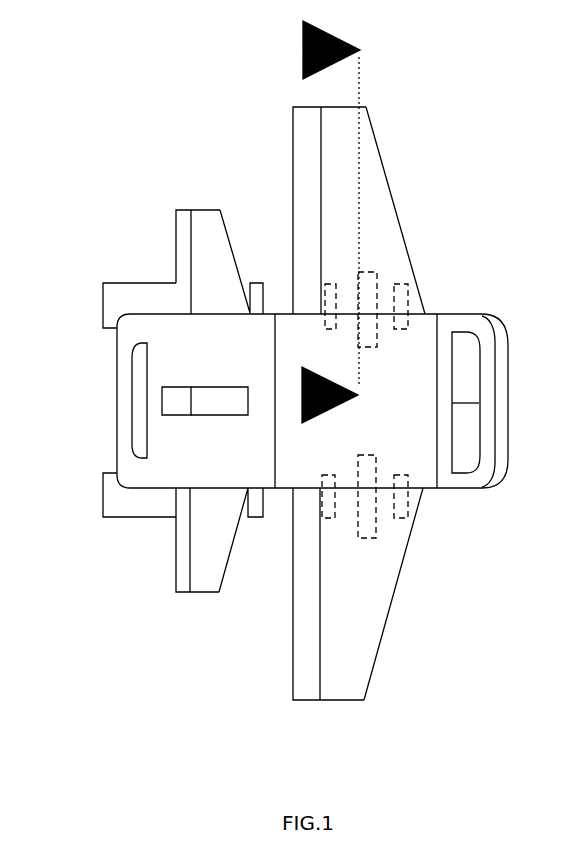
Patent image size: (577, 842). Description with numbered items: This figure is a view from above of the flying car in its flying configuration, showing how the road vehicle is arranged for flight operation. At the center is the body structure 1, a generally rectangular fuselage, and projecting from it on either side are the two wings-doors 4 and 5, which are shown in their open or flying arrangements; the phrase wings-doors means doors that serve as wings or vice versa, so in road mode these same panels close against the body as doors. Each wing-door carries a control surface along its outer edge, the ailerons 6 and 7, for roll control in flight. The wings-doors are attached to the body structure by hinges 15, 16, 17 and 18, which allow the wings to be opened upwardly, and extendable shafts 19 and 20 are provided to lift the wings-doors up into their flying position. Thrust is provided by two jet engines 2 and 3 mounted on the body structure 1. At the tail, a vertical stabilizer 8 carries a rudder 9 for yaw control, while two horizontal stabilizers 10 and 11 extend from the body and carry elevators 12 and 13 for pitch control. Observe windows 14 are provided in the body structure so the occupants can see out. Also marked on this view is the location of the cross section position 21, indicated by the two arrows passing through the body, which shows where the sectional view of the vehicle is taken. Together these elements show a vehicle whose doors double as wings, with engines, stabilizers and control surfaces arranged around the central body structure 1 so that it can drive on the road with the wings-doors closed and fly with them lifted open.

The body structure 1 is at (300, 350).
The jet engine 2 is at (118, 297).
The jet engine 3 is at (117, 502).
The wing-door 4 is at (396, 253).
The wing-door 5 is at (350, 680).
The aileron 6 is at (308, 120).
The aileron 7 is at (307, 680).
The vertical stabilizer 8 is at (220, 402).
The rudder 9 is at (177, 402).
The horizontal stabilizer 10 is at (207, 240).
The horizontal stabilizer 11 is at (218, 547).
The elevator 12 is at (173, 240).
The elevator 13 is at (177, 565).
The observe windows 14 is at (131, 428).
The hinge 15 is at (396, 287).
The hinge 16 is at (336, 285).
The hinge 17 is at (395, 519).
The hinge 18 is at (325, 518).
The extendable shaft 19 is at (378, 343).
The extendable shaft 20 is at (368, 538).
The cross section position 21 is at (331, 222).